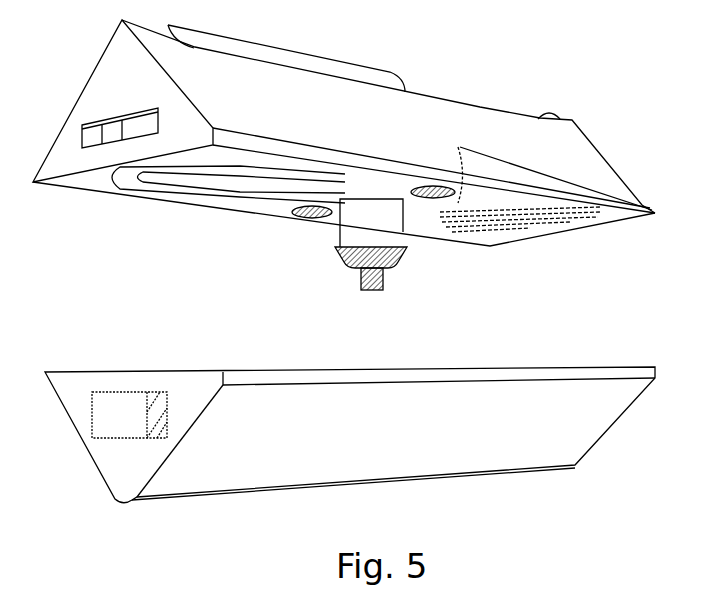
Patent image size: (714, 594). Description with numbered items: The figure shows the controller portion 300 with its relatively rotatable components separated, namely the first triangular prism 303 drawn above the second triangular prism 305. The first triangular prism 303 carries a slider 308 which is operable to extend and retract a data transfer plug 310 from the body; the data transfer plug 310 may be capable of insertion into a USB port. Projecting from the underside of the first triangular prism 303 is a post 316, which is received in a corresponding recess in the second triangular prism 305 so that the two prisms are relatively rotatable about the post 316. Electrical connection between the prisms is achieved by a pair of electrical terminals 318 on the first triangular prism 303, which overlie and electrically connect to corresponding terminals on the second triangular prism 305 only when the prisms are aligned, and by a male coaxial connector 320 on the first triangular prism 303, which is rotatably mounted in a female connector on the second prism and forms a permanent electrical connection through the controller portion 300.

The controller portion 300 is at (579, 85).
The first triangular prism 303 is at (603, 165).
The second triangular prism 305 is at (215, 475).
The slider 308 is at (350, 72).
The data transfer plug 310 is at (622, 220).
The projecting post 316 is at (387, 227).
The electrical terminals 318 is at (436, 188).
The male coaxial connector 320 is at (347, 265).